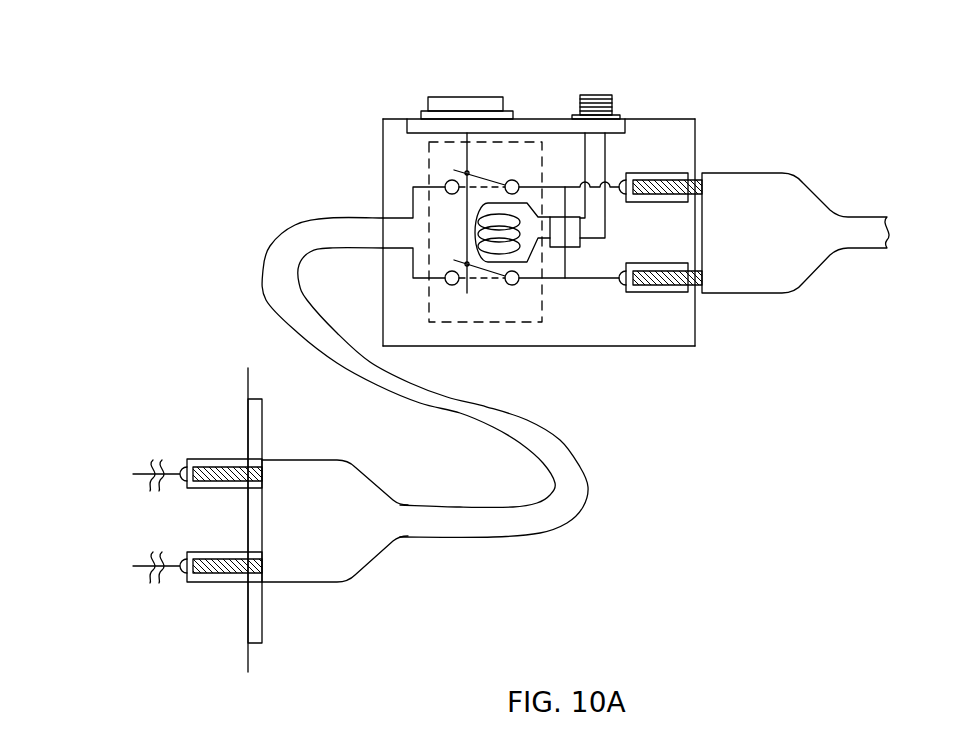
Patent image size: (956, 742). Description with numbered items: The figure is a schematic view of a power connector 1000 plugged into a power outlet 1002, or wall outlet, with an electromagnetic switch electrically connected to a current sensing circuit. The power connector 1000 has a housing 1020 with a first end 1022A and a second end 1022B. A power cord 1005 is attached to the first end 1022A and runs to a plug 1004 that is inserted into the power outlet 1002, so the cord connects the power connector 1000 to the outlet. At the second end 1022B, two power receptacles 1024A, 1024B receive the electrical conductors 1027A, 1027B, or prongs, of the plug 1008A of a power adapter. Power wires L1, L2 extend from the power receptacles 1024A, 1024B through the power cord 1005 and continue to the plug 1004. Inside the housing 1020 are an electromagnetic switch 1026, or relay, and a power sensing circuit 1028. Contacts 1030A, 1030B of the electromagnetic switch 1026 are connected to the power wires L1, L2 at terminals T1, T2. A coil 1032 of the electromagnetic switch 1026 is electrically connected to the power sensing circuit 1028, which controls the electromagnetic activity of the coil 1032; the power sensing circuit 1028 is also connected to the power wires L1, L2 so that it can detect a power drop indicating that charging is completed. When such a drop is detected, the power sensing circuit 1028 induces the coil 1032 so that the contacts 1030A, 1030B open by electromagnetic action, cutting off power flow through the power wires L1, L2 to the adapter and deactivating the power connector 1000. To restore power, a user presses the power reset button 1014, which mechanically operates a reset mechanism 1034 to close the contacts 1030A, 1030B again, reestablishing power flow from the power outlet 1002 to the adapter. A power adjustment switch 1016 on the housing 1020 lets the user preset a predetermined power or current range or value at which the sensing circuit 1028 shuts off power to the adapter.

The power connector 1000 is at (398, 59).
The power outlet 1002 is at (265, 437).
The plug 1004 is at (342, 534).
The power cord 1005 is at (262, 270).
The plug of the power adapter 1008A is at (803, 243).
The power reset button 1014 is at (433, 97).
The power adjustment switch 1016 is at (595, 93).
The housing 1020 is at (649, 118).
The first end 1022A is at (376, 112).
The second end 1022B is at (707, 122).
The power receptacle 1024A is at (677, 179).
The power receptacle 1024B is at (657, 287).
The electromagnetic switch 1026 is at (427, 207).
The electrical conductor 1027A is at (650, 172).
The electrical conductor 1027B is at (638, 292).
The power sensing circuit 1028 is at (573, 247).
The contact 1030A is at (492, 172).
The contact 1030B is at (497, 287).
The coil 1032 is at (477, 226).
The reset mechanism 1034 is at (465, 172).
The terminal T1 is at (445, 183).
The terminal T2 is at (518, 181).
The power wire L1 is at (610, 188).
The power wire L2 is at (589, 274).